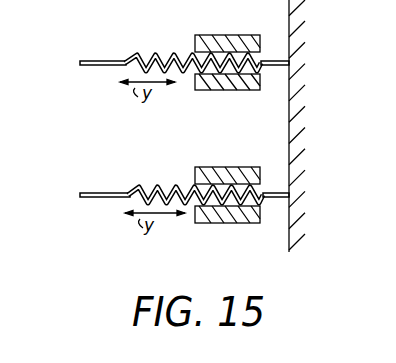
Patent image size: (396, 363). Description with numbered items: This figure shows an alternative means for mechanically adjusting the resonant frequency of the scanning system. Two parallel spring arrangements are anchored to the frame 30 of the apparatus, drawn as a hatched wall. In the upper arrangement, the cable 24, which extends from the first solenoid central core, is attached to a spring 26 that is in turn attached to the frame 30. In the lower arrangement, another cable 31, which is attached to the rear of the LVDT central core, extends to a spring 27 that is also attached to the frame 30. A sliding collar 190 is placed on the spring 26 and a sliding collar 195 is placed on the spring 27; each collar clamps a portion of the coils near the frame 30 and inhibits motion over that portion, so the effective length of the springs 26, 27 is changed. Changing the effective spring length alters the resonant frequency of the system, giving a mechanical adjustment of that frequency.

The cable 24 is at (100, 58).
The spring 26 is at (165, 51).
The sliding collar 190 is at (204, 39).
The frame 30 is at (298, 142).
The cable 31 is at (102, 191).
The spring 27 is at (178, 186).
The sliding collar 195 is at (230, 224).